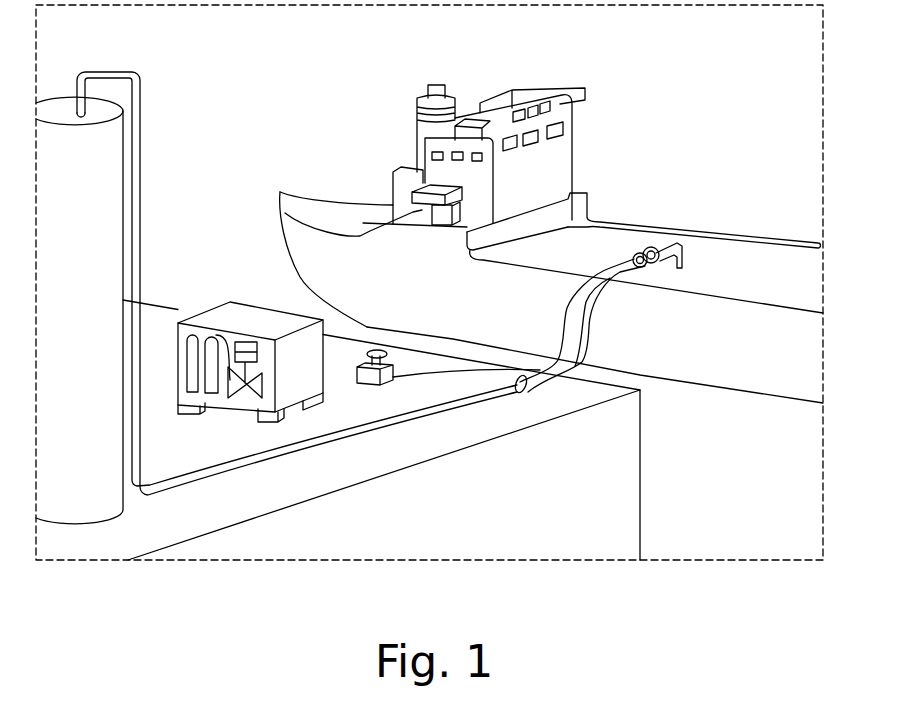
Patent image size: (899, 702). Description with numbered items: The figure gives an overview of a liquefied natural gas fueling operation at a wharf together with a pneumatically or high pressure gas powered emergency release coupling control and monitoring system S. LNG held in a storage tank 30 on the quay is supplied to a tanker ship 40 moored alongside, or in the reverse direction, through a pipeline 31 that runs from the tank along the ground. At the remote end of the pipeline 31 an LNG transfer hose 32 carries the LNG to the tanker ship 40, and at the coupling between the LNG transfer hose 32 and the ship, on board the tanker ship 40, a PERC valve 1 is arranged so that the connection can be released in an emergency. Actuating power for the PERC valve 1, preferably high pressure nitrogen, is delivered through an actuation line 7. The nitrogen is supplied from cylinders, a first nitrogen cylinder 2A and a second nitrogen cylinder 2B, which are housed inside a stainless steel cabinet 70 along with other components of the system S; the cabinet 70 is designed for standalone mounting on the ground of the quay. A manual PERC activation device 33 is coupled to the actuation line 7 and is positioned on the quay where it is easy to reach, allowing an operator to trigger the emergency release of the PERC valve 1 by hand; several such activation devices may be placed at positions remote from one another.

The pneumatically/high pressure gas powered emergency release coupling (PERC) valve 1 is at (666, 236).
The actuation line 7 is at (552, 304).
The first nitrogen cylinder 2A is at (187, 352).
The second nitrogen cylinder 2B is at (205, 357).
The storage tank 30 is at (57, 96).
The pipeline 31 is at (143, 95).
The LNG transfer hose 32 is at (613, 314).
The manual PERC activation device 33 is at (403, 400).
The tanker ship 40 is at (386, 135).
The cabinet 70 is at (243, 293).
The PERC control and monitoring system S is at (726, 478).